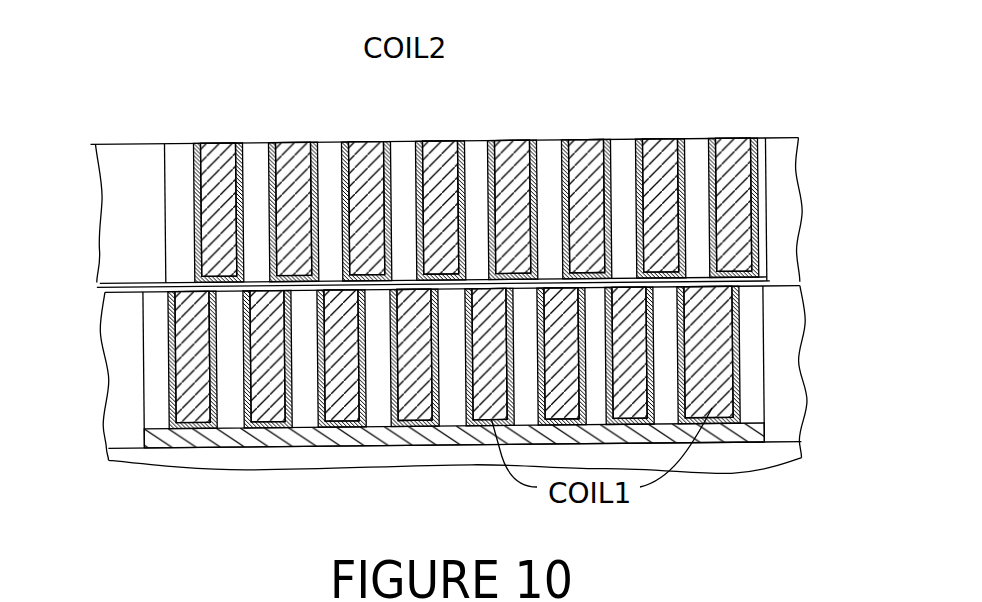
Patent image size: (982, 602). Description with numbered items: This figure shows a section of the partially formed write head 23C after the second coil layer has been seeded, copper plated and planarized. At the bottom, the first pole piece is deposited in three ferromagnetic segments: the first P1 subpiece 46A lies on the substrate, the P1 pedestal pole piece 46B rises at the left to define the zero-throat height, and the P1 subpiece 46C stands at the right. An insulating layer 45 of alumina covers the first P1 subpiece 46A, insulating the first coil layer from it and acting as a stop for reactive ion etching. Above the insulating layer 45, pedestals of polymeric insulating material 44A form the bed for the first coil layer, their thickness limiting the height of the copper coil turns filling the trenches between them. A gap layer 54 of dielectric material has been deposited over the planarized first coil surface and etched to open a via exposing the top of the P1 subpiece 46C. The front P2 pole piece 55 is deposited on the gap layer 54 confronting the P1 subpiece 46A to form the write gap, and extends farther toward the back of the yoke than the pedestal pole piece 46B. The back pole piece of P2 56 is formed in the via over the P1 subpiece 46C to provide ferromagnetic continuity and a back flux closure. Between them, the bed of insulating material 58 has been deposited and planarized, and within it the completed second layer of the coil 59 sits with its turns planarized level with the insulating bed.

The write head 23C is at (205, 113).
The second layer of the coil 59 is at (440, 157).
The bed of insulating material 58 is at (693, 160).
The front P2 pole piece 55 is at (130, 250).
The gap layer 54 is at (115, 288).
The back pole piece of P2 56 is at (792, 247).
The P1 subpiece 46C is at (782, 345).
The P1 pedestal pole piece 46B is at (122, 413).
The insulating layer 45 is at (228, 438).
The polymeric insulating material 44A is at (448, 413).
The P1 subpiece 46A is at (702, 467).